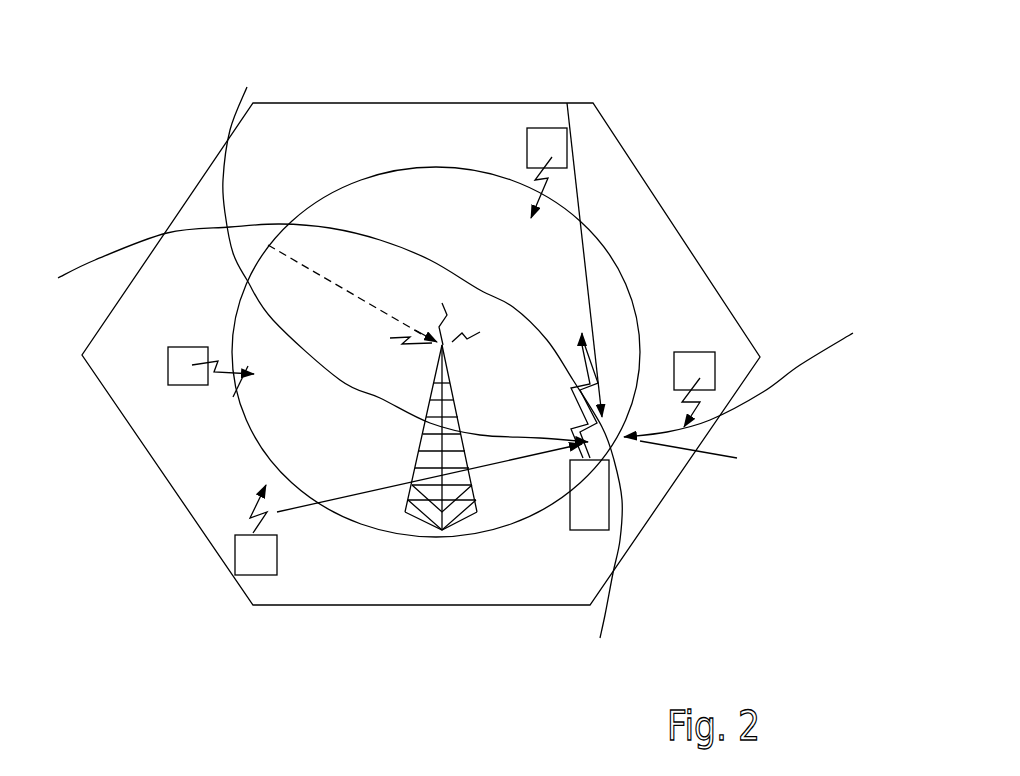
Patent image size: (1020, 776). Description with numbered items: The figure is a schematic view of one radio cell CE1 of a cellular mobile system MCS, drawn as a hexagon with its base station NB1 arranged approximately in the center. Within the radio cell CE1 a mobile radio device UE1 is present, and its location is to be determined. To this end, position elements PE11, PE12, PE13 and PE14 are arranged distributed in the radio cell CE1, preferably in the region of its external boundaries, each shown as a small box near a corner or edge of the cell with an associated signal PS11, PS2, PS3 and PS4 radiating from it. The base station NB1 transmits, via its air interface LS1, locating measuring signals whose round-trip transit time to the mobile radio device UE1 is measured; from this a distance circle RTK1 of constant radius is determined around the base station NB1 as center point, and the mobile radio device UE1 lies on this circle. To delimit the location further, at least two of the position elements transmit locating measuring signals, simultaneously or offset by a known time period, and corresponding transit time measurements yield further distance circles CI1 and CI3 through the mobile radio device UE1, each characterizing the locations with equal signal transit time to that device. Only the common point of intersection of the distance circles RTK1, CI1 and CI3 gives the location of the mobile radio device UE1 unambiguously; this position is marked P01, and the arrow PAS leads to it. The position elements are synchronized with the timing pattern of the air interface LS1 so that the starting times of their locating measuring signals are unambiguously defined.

The radio cell CE1 is at (357, 118).
The distance circle RTK1 is at (432, 165).
The air interface LS1 is at (468, 333).
The distance circle CI3 is at (610, 608).
The distance circle CI1 is at (842, 345).
The position P01 is at (712, 458).
The position arrow / signal PAS is at (580, 362).
The mobile radio device UE1 is at (609, 502).
The base station NB1 is at (462, 483).
The position element PE11 is at (547, 127).
The position signal 11 PS11 is at (553, 188).
The position element PE12 is at (168, 367).
The position signal 2 PS2 is at (233, 397).
The position element PE13 is at (235, 553).
The position signal 3 PS3 is at (253, 512).
The position element PE14 is at (715, 370).
The position signal 4 PS4 is at (697, 410).
The cellular mobile system MCS is at (340, 637).